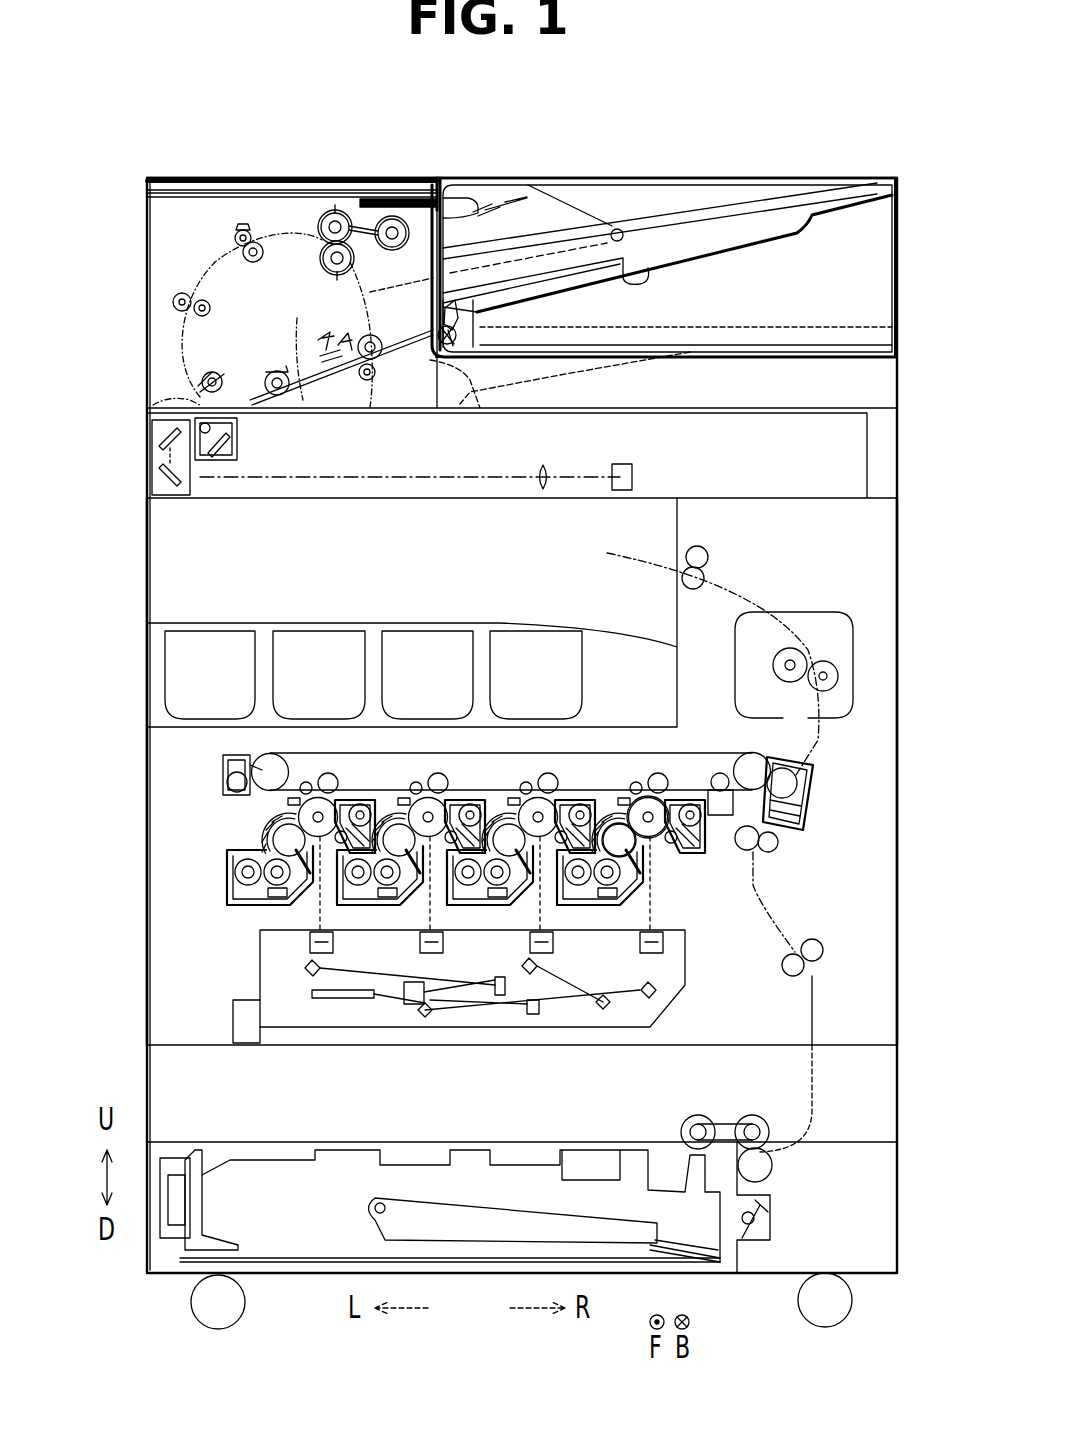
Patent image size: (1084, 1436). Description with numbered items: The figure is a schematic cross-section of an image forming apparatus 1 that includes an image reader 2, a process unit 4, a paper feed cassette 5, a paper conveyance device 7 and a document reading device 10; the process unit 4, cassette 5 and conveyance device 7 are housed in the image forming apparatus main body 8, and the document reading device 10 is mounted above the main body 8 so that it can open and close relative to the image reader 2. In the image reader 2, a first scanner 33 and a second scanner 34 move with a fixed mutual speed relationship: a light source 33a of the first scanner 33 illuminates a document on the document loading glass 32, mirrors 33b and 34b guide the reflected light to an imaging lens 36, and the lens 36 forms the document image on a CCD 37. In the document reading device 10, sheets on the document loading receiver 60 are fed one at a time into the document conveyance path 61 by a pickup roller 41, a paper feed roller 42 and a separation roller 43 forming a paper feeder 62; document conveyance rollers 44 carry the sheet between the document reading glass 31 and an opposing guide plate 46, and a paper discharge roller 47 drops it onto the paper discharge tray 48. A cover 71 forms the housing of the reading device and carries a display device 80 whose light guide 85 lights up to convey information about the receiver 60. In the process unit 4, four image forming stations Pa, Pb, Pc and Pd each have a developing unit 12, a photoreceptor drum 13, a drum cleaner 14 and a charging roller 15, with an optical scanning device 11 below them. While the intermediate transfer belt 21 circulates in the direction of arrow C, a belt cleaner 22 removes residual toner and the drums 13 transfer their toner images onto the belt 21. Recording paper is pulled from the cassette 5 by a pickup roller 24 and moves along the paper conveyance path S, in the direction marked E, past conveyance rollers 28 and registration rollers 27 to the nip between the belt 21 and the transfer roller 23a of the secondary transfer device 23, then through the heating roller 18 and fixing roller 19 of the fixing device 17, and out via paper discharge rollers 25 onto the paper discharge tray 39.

The image forming apparatus 1 is at (595, 176).
The image reader 2 is at (900, 460).
The process unit 4 is at (428, 800).
The paper feed cassette 5 is at (400, 1140).
The paper conveyance device 7 is at (875, 874).
The image forming apparatus main body 8 is at (145, 586).
The document reading device 10 is at (145, 200).
The optical scanning device 11 is at (688, 1000).
The developing unit 12 is at (582, 920).
The photoreceptor drum 13 is at (622, 808).
The drum cleaner 14 is at (710, 797).
The charging roller 15 is at (652, 840).
The fixing device 17 is at (857, 648).
The heating roller 18 is at (773, 665).
The fixing roller 19 is at (838, 676).
The intermediate transfer belt 21 is at (262, 752).
The belt cleaner 22 is at (224, 780).
The secondary transfer device 23 is at (812, 770).
The transfer roller 23a is at (800, 795).
The pickup roller 24 is at (688, 1125).
The paper discharge rollers 25 is at (703, 555).
The registration rollers 27 is at (780, 842).
The conveyance rollers 28 is at (820, 945).
The document reading glass 31 is at (212, 415).
The document loading glass 32 is at (298, 340).
The first scanner 33 is at (230, 462).
The light source 33a is at (242, 432).
The mirror 33b is at (240, 452).
The second scanner 34 is at (176, 497).
The mirror 34b is at (160, 438).
The imaging lens 36 is at (543, 490).
The charge coupled device (CCD) 37 is at (635, 477).
The paper discharge tray 39 is at (275, 625).
The pickup roller 41 is at (390, 216).
The paper feed roller 42 is at (334, 240).
The separation roller 43 is at (312, 212).
The document conveyance rollers 44 is at (238, 230).
The opposing guide plate 46 is at (226, 384).
The paper discharge roller 47 is at (442, 395).
The paper discharge tray 48 is at (712, 350).
The document loading receiver 60 is at (650, 228).
The document conveyance path 61 is at (207, 262).
The paper feeder 62 is at (393, 142).
The cover 71 is at (168, 195).
The display device 80 is at (458, 176).
The light guide 85 is at (428, 196).
The image forming station Pa is at (674, 766).
The image forming station Pb is at (566, 766).
The image forming station Pc is at (461, 766).
The image forming station Pd is at (351, 766).
The paper conveyance path S is at (757, 885).
The sheet feed direction E is at (803, 1007).
The arrow C is at (700, 753).